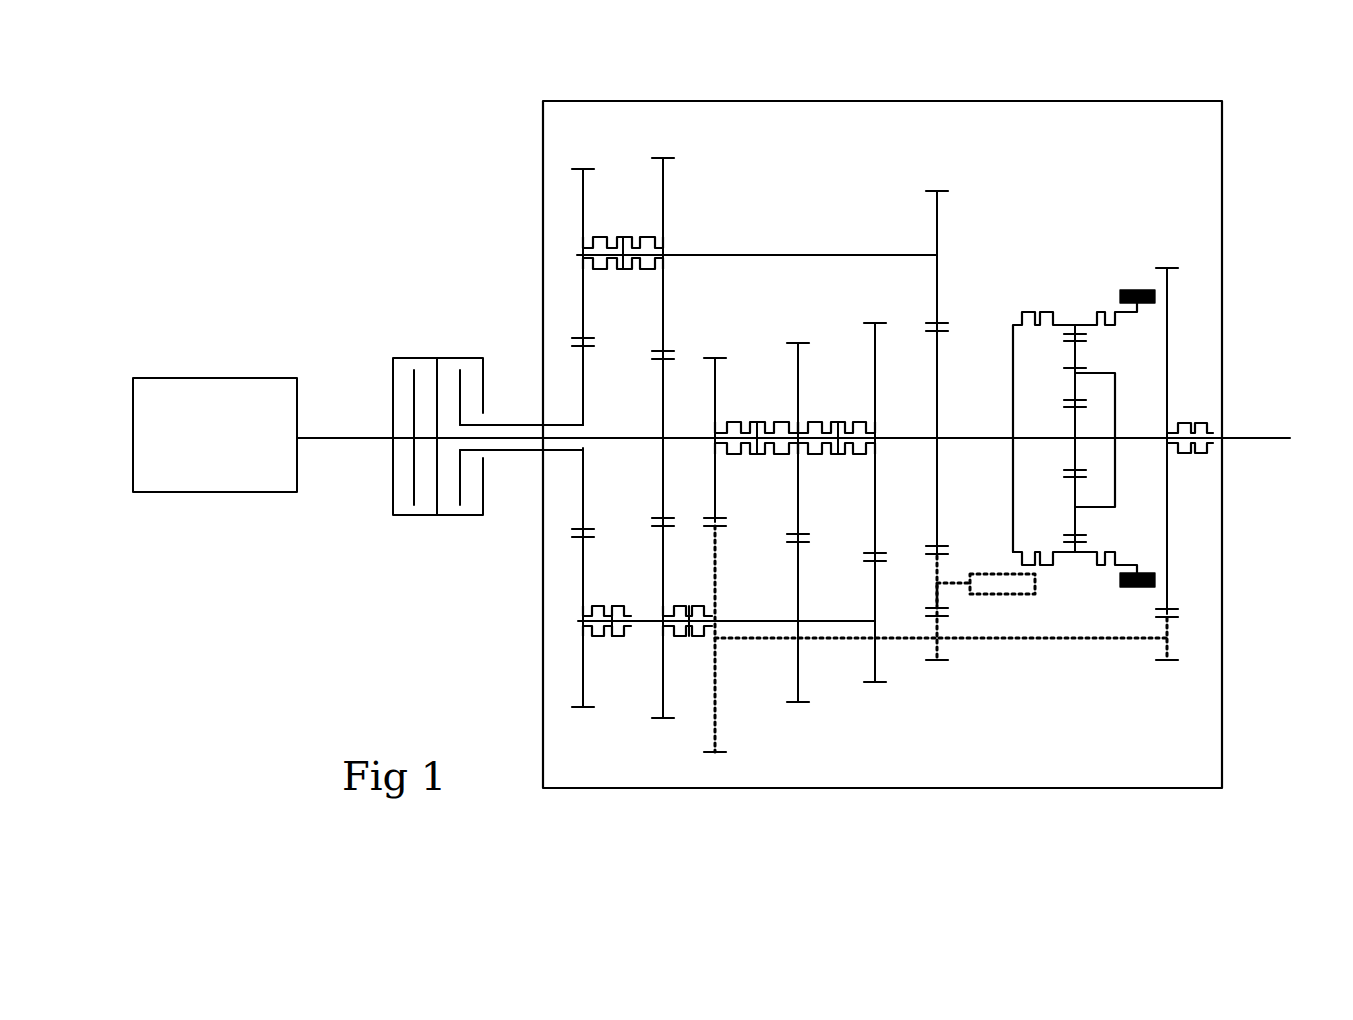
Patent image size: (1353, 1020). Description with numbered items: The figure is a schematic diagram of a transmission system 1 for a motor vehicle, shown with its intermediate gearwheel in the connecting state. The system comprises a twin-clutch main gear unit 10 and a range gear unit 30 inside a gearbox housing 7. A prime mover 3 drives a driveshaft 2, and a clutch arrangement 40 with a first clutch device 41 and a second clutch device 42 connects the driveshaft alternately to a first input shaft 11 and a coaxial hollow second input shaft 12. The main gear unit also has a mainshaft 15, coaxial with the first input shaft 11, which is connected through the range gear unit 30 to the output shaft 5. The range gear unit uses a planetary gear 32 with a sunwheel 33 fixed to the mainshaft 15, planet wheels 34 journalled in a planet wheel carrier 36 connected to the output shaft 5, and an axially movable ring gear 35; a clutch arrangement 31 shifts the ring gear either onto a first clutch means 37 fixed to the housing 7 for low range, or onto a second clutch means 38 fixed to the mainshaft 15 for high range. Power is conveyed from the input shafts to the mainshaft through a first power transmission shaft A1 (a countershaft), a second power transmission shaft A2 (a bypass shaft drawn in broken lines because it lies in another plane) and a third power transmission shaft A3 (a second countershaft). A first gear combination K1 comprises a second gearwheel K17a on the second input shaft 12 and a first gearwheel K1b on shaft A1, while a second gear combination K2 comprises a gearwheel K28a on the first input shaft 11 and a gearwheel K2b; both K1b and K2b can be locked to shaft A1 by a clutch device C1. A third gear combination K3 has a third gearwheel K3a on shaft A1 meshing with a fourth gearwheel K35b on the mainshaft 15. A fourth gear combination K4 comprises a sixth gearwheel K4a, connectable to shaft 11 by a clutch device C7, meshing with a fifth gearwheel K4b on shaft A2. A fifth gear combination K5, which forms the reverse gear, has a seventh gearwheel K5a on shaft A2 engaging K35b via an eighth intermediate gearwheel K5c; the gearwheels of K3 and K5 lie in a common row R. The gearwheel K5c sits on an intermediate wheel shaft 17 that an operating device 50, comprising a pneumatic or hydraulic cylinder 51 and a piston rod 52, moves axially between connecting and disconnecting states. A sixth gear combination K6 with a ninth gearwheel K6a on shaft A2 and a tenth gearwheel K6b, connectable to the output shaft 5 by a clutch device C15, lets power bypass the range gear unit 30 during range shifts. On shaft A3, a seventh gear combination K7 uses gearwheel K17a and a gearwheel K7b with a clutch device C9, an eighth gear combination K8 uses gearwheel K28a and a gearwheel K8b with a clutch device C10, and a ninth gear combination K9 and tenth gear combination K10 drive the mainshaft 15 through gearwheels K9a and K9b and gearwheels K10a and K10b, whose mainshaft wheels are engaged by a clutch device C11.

The transmission system 1 is at (760, 417).
The driveshaft 2 is at (340, 436).
The prime mover 3 is at (216, 388).
The output shaft 5 is at (1252, 432).
The gearbox housing 7 is at (1010, 101).
The main gear unit 10 is at (1082, 365).
The first input shaft 11 is at (616, 434).
The second input shaft 12 is at (505, 422).
The mainshaft 15 is at (895, 434).
The intermediate wheel shaft 17 is at (930, 598).
The range gear unit 30 is at (1087, 387).
The clutch arrangement 31 is at (1075, 318).
The planetary gear 32 is at (1140, 498).
The sunwheel 33 is at (1072, 420).
The planet wheels 34 is at (1080, 360).
The ring gear 35 is at (1070, 333).
The planet wheel carrier 36 is at (1117, 410).
The first clutch means 37 is at (1115, 310).
The second clutch means 38 is at (1030, 305).
The clutch arrangement 40 is at (409, 426).
The first clutch device 41 is at (401, 520).
The second clutch device 42 is at (452, 520).
The operating device 50 is at (1012, 579).
The pneumatic or hydraulic cylinder 51 is at (984, 596).
The piston rod 52 is at (957, 580).
The first gear combination K1 is at (531, 235).
The first gearwheel K1b is at (583, 210).
The second gearwheel K17a is at (583, 372).
The second gear combination K2 is at (695, 239).
The gearwheel K2b is at (666, 210).
The gearwheel K28a is at (666, 372).
The third gear combination K3 is at (931, 166).
The third gearwheel K3a is at (940, 218).
The fourth gearwheel K35b is at (945, 338).
The fourth gear combination K4 is at (745, 581).
The sixth gearwheel K4a is at (718, 372).
The fifth gearwheel K4b is at (722, 700).
The fifth gear combination K5 is at (944, 647).
The seventh gearwheel K5a is at (944, 654).
The eighth intermediate gearwheel K5c is at (935, 562).
The sixth gear combination K6 is at (1190, 503).
The ninth gearwheel K6a is at (1163, 655).
The tenth gearwheel K6b is at (1170, 580).
The seventh gear combination K7 is at (531, 615).
The gearwheel K7b is at (580, 660).
The eighth gear combination K8 is at (639, 642).
The gearwheel K8b is at (660, 545).
The ninth gear combination K9 is at (804, 527).
The first gearwheel K9a is at (790, 573).
The second gearwheel K9b is at (800, 360).
The tenth gear combination K10 is at (864, 519).
The gearwheel K10a is at (872, 662).
The gearwheel K10b is at (878, 350).
The gearwheel row R is at (951, 303).
The first power transmission shaft A1 is at (755, 251).
The second power transmission shaft A2 is at (1022, 644).
The third power transmission shaft A3 is at (642, 628).
The clutch device C1 is at (624, 236).
The clutch device C7 is at (759, 418).
The clutch device C9 is at (614, 602).
The clutch device C10 is at (687, 602).
The clutch device C11 is at (838, 418).
The clutch device C15 is at (1192, 416).